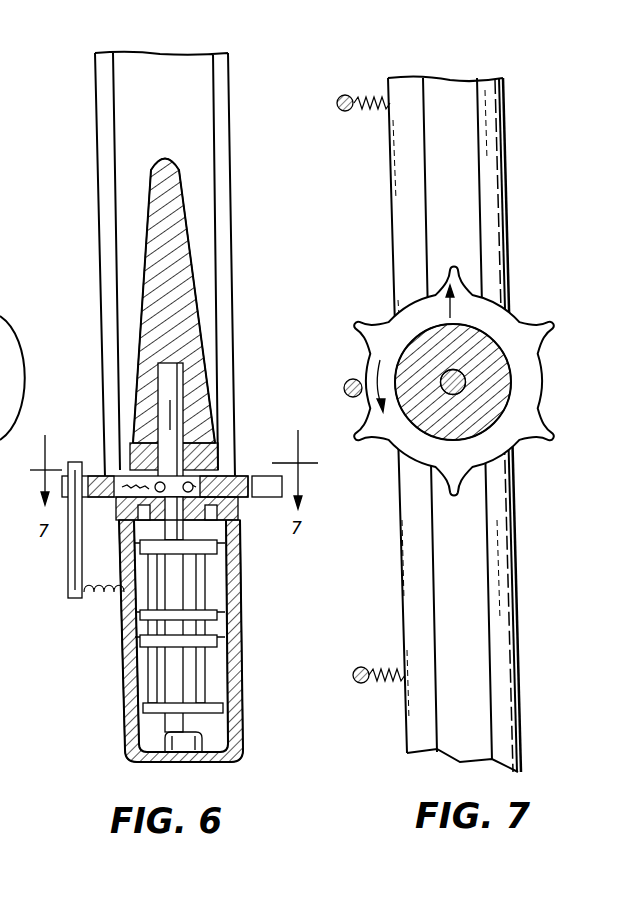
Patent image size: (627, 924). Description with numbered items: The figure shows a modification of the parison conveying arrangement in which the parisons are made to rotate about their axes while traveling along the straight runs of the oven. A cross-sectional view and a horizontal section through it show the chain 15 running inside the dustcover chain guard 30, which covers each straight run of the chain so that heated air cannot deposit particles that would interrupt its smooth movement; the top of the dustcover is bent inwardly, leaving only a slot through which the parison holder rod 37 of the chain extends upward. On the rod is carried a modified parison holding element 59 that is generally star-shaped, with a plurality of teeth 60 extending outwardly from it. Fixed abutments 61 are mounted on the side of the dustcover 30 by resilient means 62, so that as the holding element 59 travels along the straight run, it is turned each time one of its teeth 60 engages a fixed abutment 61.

In FIG. 6, the chain 15 is at (207, 583).
In FIG. 6, the chain guard 30 is at (240, 652).
In FIG. 7, the chain guard 30 is at (515, 615).
In FIG. 6, the parison holder rod 37 is at (237, 512).
In FIG. 6, the parison holding element 59 is at (252, 478).
In FIG. 7, the parison holding element 59 is at (522, 387).
In FIG. 6, the teeth 60 is at (268, 487).
In FIG. 7, the teeth 60 is at (545, 440).
In FIG. 6, the fixed abutment 61 is at (70, 545).
In FIG. 7, the fixed abutment 61 is at (340, 112).
In FIG. 6, the resilient means 62 is at (100, 600).
In FIG. 7, the resilient means 62 is at (372, 112).